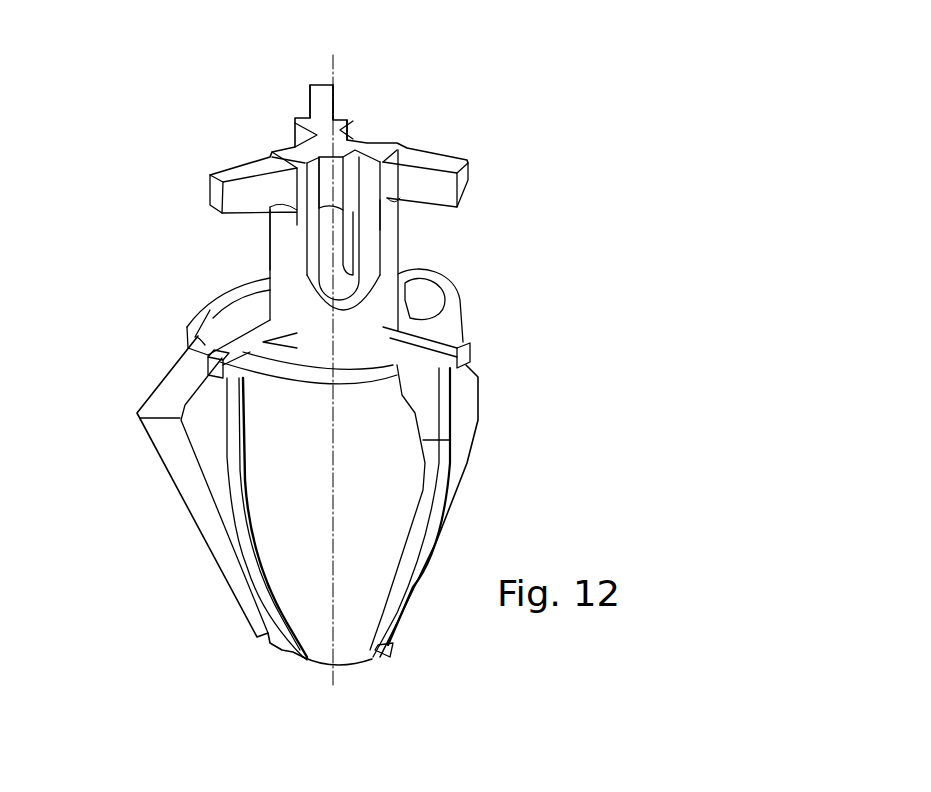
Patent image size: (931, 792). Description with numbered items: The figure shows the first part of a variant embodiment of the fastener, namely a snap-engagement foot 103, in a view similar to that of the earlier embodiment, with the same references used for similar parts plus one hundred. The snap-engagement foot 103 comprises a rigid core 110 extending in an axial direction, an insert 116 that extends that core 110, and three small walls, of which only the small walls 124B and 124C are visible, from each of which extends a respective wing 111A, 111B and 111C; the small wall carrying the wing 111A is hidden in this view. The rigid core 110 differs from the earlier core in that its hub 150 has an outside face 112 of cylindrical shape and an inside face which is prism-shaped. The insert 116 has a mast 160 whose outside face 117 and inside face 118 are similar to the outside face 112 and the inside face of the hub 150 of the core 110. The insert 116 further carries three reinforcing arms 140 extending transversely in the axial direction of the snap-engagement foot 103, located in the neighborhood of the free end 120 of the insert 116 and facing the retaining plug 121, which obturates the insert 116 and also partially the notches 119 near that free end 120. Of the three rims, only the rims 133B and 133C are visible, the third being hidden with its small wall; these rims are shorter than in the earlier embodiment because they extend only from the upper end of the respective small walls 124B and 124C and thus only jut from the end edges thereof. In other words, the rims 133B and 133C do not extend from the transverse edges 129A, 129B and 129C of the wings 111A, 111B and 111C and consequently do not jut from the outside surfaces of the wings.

The snap-engagement foot 103 is at (579, 180).
The rigid core 110 is at (377, 658).
The wing 111A is at (157, 462).
The wing 111B is at (467, 400).
The wing 111C is at (273, 517).
The outside face 112 is at (357, 342).
The insert 116 is at (430, 249).
The outside face 117 is at (400, 233).
The inside face 118 is at (347, 279).
The notches 119 is at (327, 234).
The free end 120 is at (285, 138).
The retaining plug 121 is at (352, 140).
The small wall 124B is at (423, 445).
The small wall 124C is at (230, 457).
The transverse edge 129A is at (210, 303).
The transverse edge 129B is at (450, 305).
The transverse edge 129C is at (328, 363).
The rim 133B is at (465, 331).
The rim 133C is at (213, 339).
The reinforcing arms 140 is at (323, 83).
The hub 150 is at (385, 648).
The mast 160 is at (280, 258).